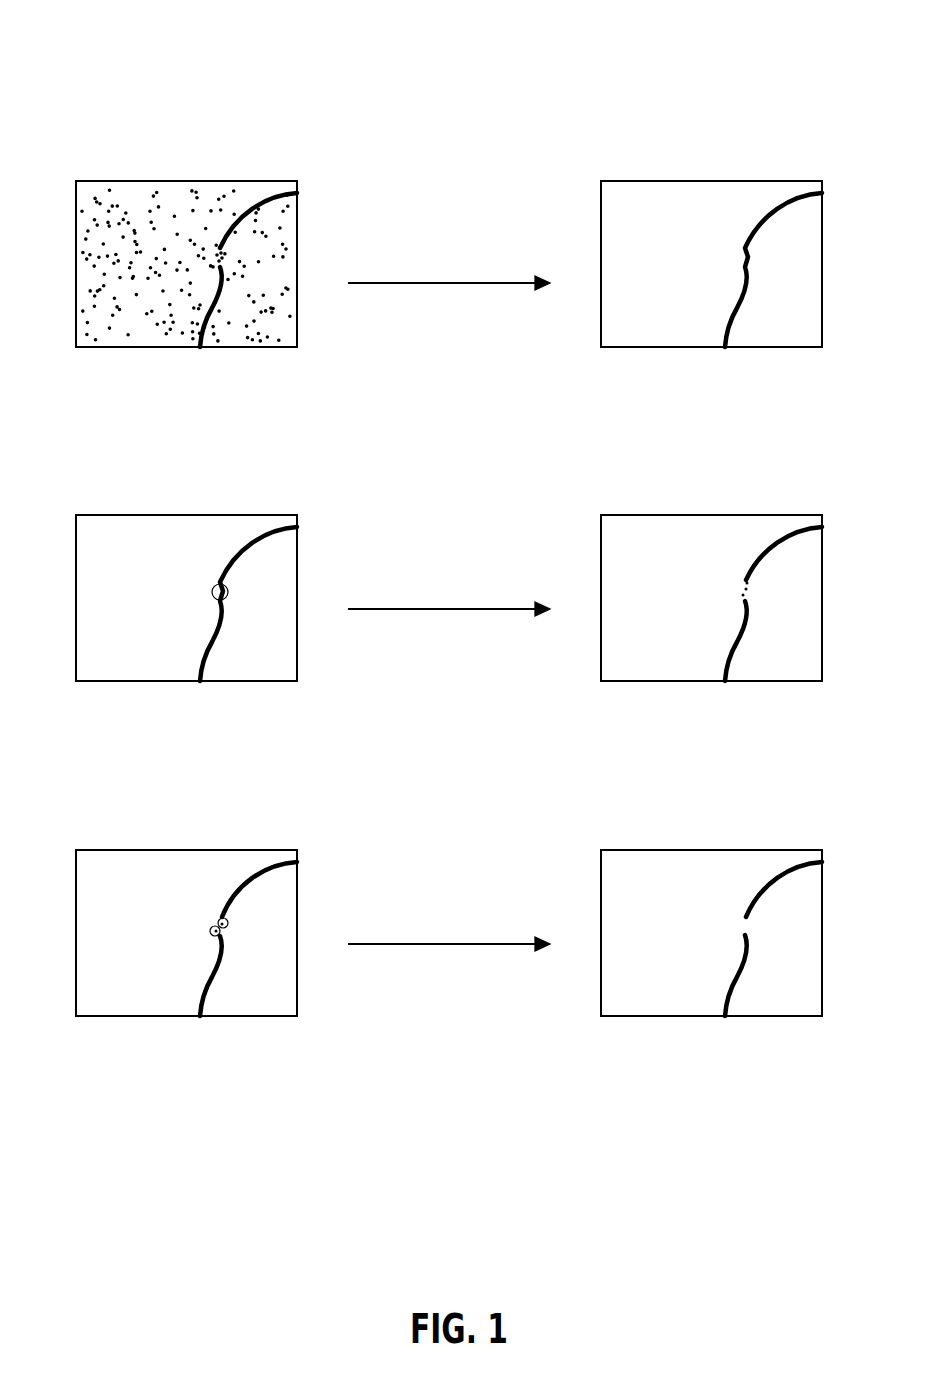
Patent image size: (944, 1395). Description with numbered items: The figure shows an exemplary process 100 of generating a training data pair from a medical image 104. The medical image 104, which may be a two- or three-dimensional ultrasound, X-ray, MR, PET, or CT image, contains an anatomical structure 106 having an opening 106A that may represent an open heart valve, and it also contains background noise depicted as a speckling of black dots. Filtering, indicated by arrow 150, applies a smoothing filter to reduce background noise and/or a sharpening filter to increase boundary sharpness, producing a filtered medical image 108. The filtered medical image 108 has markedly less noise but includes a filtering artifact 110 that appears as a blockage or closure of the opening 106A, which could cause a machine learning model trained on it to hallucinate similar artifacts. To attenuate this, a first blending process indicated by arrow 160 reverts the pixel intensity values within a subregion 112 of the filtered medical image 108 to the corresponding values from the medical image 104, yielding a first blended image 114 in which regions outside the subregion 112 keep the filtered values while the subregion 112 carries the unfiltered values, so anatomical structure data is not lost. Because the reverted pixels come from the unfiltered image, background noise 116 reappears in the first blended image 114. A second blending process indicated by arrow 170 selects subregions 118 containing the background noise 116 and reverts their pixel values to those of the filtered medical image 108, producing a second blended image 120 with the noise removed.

The process 100 is at (727, 47).
The medical image 104 is at (96, 181).
The anatomical structure 106 is at (273, 195).
The opening 106A is at (218, 252).
The filtered medical image 108 is at (622, 181).
The filtering artifact 110 is at (744, 252).
The subregion 112 is at (218, 586).
The first blended image 114 is at (622, 515).
The background noise 116 is at (742, 587).
The subregions 118 is at (217, 922).
The second blended image 120 is at (622, 850).
The arrow 150 is at (382, 283).
The arrow 160 is at (382, 609).
The arrow 170 is at (382, 944).